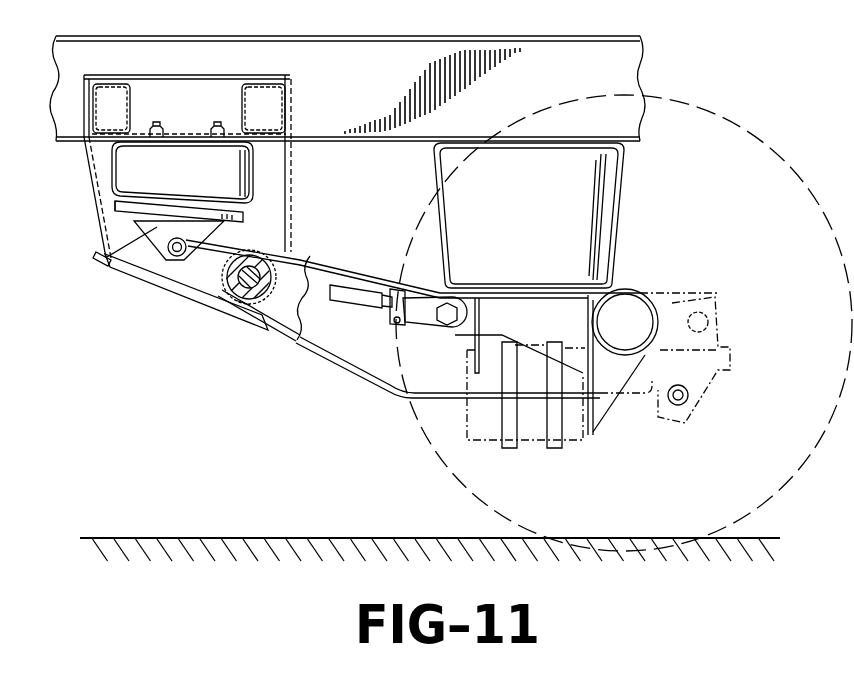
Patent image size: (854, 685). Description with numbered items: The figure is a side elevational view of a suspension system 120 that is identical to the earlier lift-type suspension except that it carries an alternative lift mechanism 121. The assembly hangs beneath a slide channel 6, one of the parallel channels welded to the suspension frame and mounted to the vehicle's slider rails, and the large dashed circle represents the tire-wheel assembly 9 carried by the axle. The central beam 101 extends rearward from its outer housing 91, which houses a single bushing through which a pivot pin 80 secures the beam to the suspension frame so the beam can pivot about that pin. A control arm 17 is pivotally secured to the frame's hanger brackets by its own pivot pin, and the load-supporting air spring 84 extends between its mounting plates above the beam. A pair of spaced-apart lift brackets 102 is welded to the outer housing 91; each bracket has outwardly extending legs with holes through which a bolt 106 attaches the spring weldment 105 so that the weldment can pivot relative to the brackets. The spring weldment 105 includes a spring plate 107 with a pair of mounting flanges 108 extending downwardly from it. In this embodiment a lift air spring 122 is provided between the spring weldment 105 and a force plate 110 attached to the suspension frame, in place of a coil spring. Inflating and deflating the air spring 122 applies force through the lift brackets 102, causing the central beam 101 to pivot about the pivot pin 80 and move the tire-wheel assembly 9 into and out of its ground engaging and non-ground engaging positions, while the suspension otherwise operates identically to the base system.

The slide channel 6 is at (622, 76).
The tire-wheel assembly 9 is at (748, 122).
The control arm 17 is at (360, 288).
The pivot pin 80 is at (258, 294).
The air spring 84 is at (590, 216).
The outer housing 91 is at (236, 302).
The central beam 101 is at (356, 376).
The lift bracket 102 is at (202, 270).
The spring weldment 105 is at (138, 228).
The bolt 106 is at (172, 254).
The spring plate 107 is at (127, 218).
The mounting flange 108 is at (128, 262).
The force plate 110 is at (183, 137).
The suspension system 120 is at (152, 364).
The lift mechanism 121 is at (258, 200).
The air spring 122 is at (232, 168).